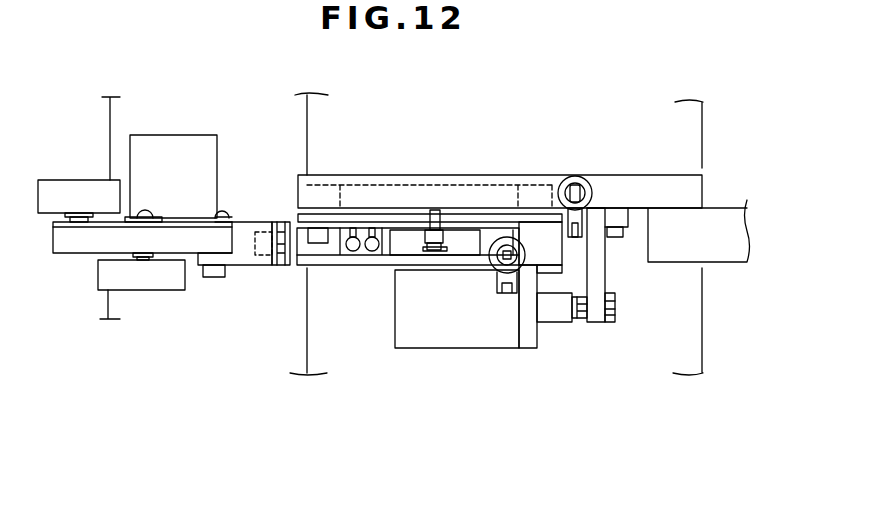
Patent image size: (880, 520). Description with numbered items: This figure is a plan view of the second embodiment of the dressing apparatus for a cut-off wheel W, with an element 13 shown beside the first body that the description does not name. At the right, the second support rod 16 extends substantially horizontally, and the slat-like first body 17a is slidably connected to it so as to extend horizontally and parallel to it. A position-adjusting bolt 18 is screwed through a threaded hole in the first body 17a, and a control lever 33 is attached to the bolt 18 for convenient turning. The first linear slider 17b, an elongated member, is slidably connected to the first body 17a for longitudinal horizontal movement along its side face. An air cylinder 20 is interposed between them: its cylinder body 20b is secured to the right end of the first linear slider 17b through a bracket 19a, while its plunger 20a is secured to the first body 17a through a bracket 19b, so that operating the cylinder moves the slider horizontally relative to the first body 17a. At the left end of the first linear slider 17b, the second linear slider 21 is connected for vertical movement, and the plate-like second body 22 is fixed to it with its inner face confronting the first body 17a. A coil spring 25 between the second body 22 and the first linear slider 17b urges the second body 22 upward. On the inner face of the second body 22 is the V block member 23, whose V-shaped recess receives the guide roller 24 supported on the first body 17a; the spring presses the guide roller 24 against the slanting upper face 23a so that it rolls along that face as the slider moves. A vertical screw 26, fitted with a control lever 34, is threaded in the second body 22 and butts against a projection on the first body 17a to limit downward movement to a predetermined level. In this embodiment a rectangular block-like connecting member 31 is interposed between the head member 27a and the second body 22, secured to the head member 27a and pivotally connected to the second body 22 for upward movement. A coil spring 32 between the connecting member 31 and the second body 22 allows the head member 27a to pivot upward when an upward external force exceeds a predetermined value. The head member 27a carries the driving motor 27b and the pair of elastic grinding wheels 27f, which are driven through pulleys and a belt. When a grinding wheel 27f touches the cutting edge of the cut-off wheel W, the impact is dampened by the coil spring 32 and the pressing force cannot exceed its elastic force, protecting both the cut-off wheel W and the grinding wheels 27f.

The cut-off wheel W is at (110, 150).
The base 13 is at (305, 132).
The second support rod 16 is at (723, 253).
The first body 17a is at (663, 180).
The first linear slider 17b is at (393, 218).
The bolt 18 is at (588, 183).
The bracket 19a is at (528, 340).
The bracket 19b is at (597, 280).
The air cylinder 20 is at (499, 341).
The plunger 20a is at (557, 327).
The cylinder body 20b is at (413, 337).
The second linear slider 21 is at (299, 225).
The second body 22 is at (360, 262).
The V block member 23 is at (420, 257).
The slanting upper face 23a is at (410, 242).
The guide roller 24 is at (447, 245).
The coil spring 25 is at (378, 237).
The vertical screw 26 is at (493, 280).
The head member 27a is at (88, 248).
The driving motor 27b is at (180, 147).
The elastic grinding wheels 27f is at (68, 183).
The connecting member 31 is at (247, 267).
The coil spring 32 is at (285, 265).
The control lever 33 is at (577, 237).
The control lever 34 is at (505, 293).